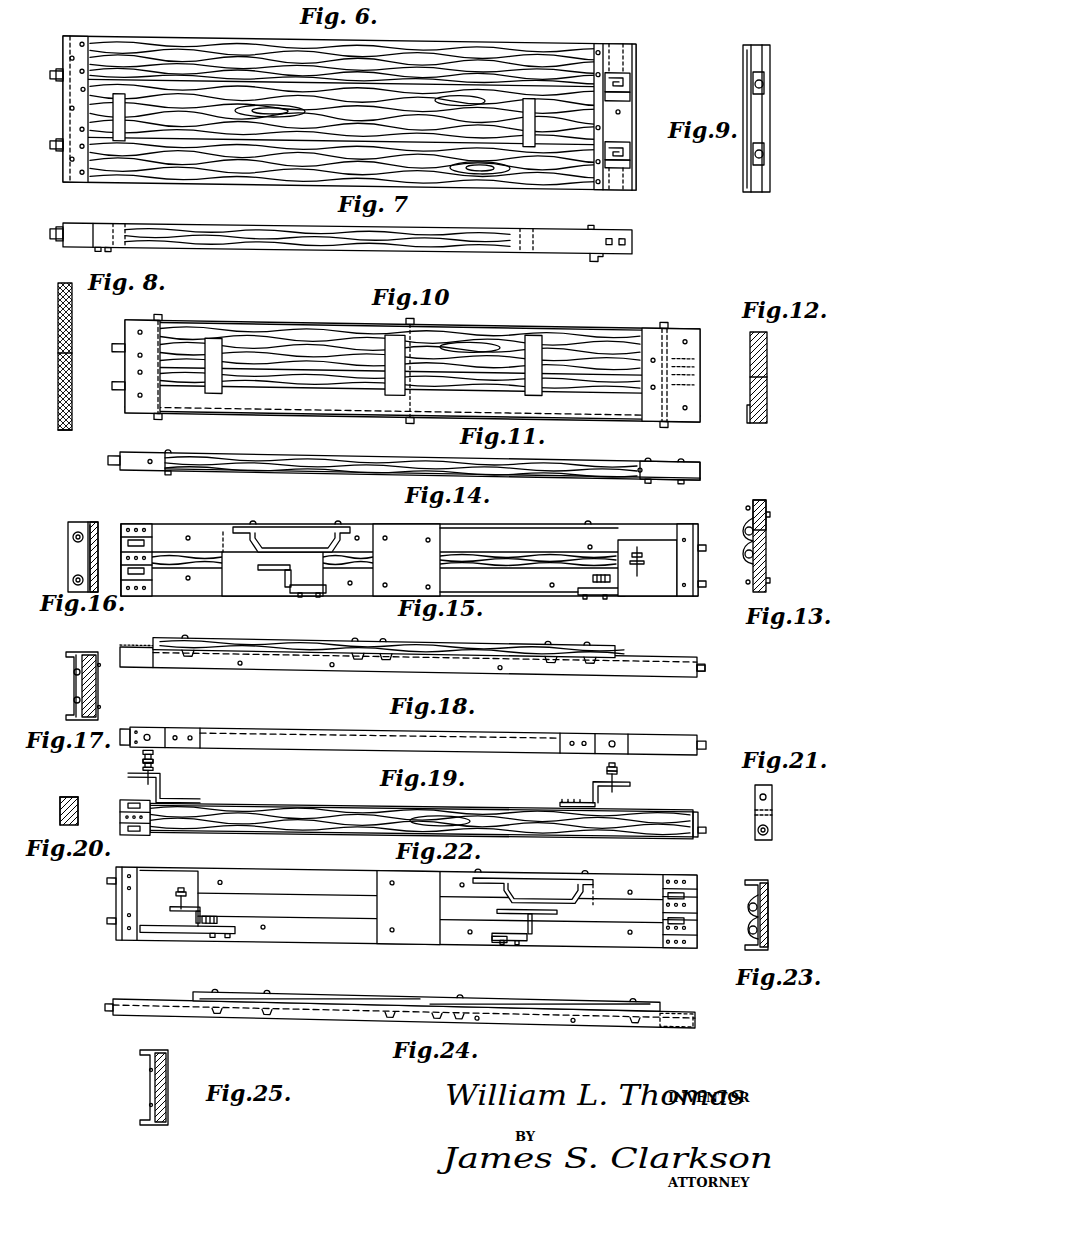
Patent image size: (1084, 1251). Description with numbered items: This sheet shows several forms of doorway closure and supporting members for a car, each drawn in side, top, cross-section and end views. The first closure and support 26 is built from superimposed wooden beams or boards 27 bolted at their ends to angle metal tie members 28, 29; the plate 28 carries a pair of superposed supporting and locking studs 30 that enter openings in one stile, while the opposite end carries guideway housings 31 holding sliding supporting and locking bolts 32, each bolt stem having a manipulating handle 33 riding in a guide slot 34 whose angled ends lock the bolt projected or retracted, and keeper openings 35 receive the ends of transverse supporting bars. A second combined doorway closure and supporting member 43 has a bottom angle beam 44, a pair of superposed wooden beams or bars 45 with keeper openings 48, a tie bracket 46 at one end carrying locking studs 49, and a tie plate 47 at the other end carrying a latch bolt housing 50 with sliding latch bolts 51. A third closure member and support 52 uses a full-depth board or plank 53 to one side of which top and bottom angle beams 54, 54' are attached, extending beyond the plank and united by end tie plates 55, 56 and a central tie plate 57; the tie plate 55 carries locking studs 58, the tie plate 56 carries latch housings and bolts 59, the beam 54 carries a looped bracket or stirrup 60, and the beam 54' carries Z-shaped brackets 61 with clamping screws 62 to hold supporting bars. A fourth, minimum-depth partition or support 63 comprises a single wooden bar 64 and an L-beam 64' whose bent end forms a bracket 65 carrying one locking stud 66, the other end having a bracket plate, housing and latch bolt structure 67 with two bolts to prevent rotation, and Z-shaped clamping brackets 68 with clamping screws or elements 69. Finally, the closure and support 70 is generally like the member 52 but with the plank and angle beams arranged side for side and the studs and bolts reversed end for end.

In FIG. 6, the doorway closure and support 26 is at (243, 34).
In FIG. 9, the doorway closure and support 26 is at (736, 77).
In FIG. 7, the doorway closure and support 26 is at (256, 228).
In FIG. 8, the doorway closure and support 26 is at (60, 284).
In FIG. 6, the wooden beams or boards 27 is at (212, 124).
In FIG. 8, the wooden beams or boards 27 is at (60, 428).
In FIG. 6, the angle metal tie member 28 is at (82, 40).
In FIG. 7, the angle metal tie member 28 is at (90, 250).
In FIG. 6, the angle metal tie member 29 is at (600, 170).
In FIG. 9, the angle metal tie member 29 is at (748, 88).
In FIG. 7, the angle metal tie member 29 is at (590, 258).
In FIG. 6, the supporting and locking studs 30 is at (52, 140).
In FIG. 7, the supporting and locking studs 30 is at (55, 229).
In FIG. 9, the guideway housings 31 is at (766, 82).
In FIG. 9, the sliding supporting and locking bolts 32 is at (764, 88).
In FIG. 6, the manipulating handle 33 is at (632, 95).
In FIG. 6, the guide slot 34 is at (632, 81).
In FIG. 6, the sockets or keeper openings 35 is at (119, 142).
In FIG. 10, the combined doorway closure and supporting member 43 is at (470, 326).
In FIG. 10, the bottom angle beam 44 is at (298, 414).
In FIG. 11, the bottom angle beam 44 is at (294, 476).
In FIG. 13, the bottom angle beam 44 is at (752, 572).
In FIG. 10, the wooden beams or bars 45 is at (302, 380).
In FIG. 11, the wooden beams or bars 45 is at (268, 450).
In FIG. 13, the wooden beams or bars 45 is at (766, 500).
In FIG. 10, the tie bracket 46 is at (124, 407).
In FIG. 10, the tie plate 47 is at (680, 338).
In FIG. 11, the tie plate 47 is at (678, 481).
In FIG. 10, the keeper openings 48 is at (213, 394).
In FIG. 10, the locking studs 49 is at (112, 384).
In FIG. 11, the locking studs 49 is at (112, 468).
In FIG. 13, the latch bolt housing 50 is at (770, 528).
In FIG. 13, the sliding latch bolts 51 is at (749, 520).
In FIG. 14, the doorway closure member and support 52 is at (372, 518).
In FIG. 16, the doorway closure member and support 52 is at (92, 522).
In FIG. 15, the doorway closure member and support 52 is at (352, 669).
In FIG. 16, the board or plank 53 is at (96, 548).
In FIG. 15, the board or plank 53 is at (320, 644).
In FIG. 17, the board or plank 53 is at (98, 686).
In FIG. 14, the top angle beam 54 is at (522, 525).
In FIG. 14, the bottom angle beam 54' is at (502, 604).
In FIG. 14, the end tie plate 55 is at (686, 538).
In FIG. 16, the end tie plate 55 is at (72, 534).
In FIG. 14, the end tie plate 56 is at (132, 592).
In FIG. 14, the central tie plate 57 is at (412, 572).
In FIG. 17, the central tie plate 57 is at (74, 686).
In FIG. 14, the locking studs 58 is at (700, 590).
In FIG. 16, the locking studs 58 is at (70, 548).
In FIG. 15, the locking studs 58 is at (722, 667).
In FIG. 14, the latch housings and bolts 59 is at (119, 530).
In FIG. 14, the looped bracket or stirrup 60 is at (292, 536).
In FIG. 14, the Z-shaped brackets 61 is at (286, 580).
In FIG. 14, the clamping screws 62 is at (637, 548).
In FIG. 18, the doorway partition or support 63 is at (332, 736).
In FIG. 19, the doorway partition or support 63 is at (326, 812).
In FIG. 20, the doorway partition or support 63 is at (59, 806).
In FIG. 19, the wooden bar 64 is at (421, 843).
In FIG. 20, the wooden bar 64 is at (85, 811).
In FIG. 19, the L-beam 64' is at (421, 795).
In FIG. 20, the L-beam 64' is at (62, 781).
In FIG. 19, the bracket 65 is at (694, 826).
In FIG. 20, the bracket 65 is at (78, 797).
In FIG. 21, the bracket 65 is at (772, 820).
In FIG. 19, the locking stud 66 is at (706, 828).
In FIG. 21, the locking stud 66 is at (758, 838).
In FIG. 18, the bracket plate, housing and latch bolt structure 67 is at (126, 746).
In FIG. 19, the bracket plate, housing and latch bolt structure 67 is at (148, 833).
In FIG. 18, the Z-shaped clamping brackets 68 is at (186, 730).
In FIG. 19, the Z-shaped clamping brackets 68 is at (170, 780).
In FIG. 21, the Z-shaped clamping brackets 68 is at (754, 792).
In FIG. 18, the clamping screws or elements 69 is at (154, 755).
In FIG. 19, the clamping screws or elements 69 is at (620, 768).
In FIG. 22, the closure and support 70 is at (358, 912).
In FIG. 24, the closure and support 70 is at (412, 996).
In FIG. 25, the closure and support 70 is at (168, 1080).